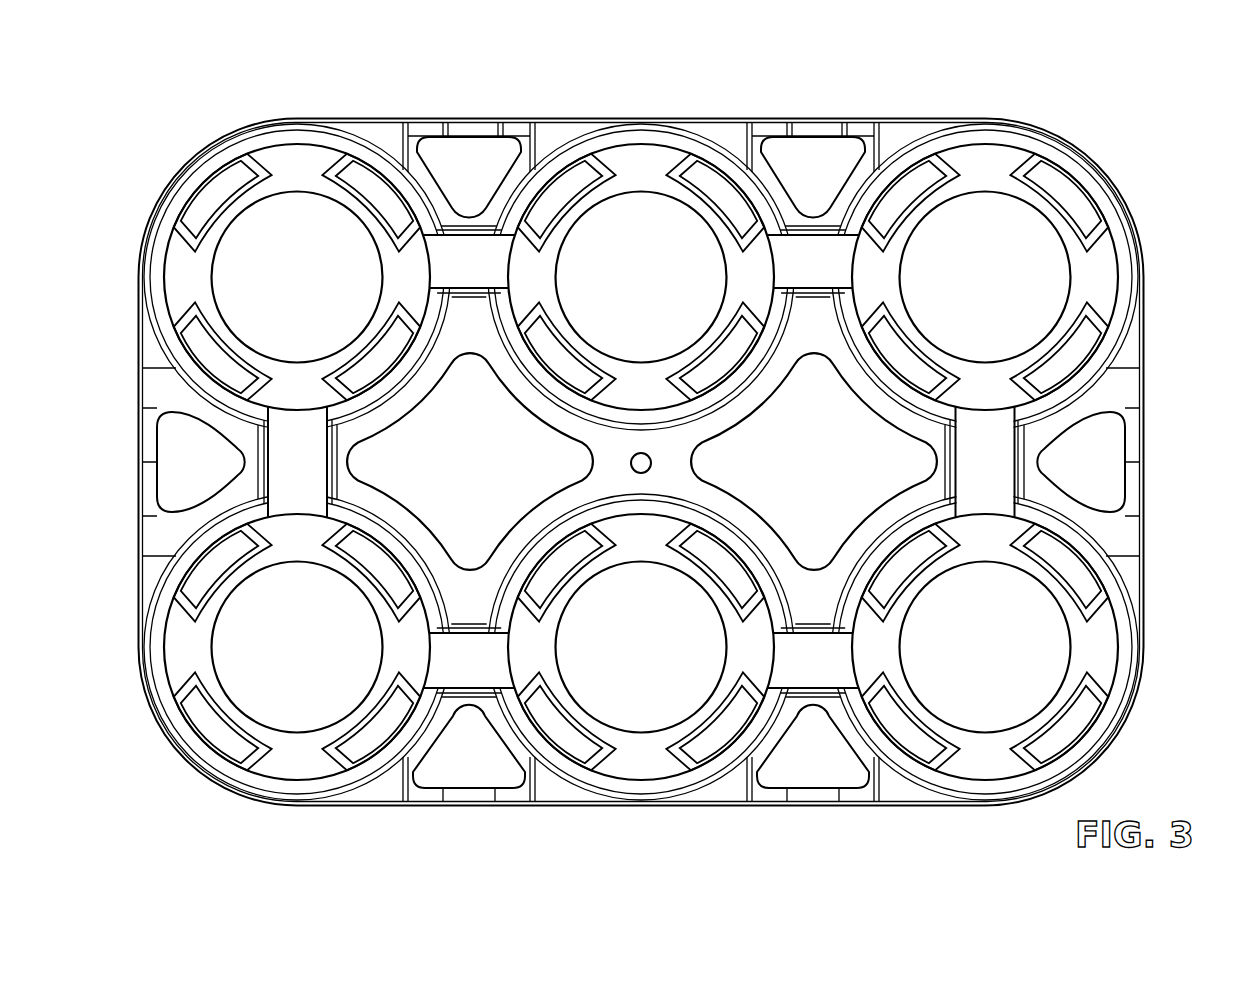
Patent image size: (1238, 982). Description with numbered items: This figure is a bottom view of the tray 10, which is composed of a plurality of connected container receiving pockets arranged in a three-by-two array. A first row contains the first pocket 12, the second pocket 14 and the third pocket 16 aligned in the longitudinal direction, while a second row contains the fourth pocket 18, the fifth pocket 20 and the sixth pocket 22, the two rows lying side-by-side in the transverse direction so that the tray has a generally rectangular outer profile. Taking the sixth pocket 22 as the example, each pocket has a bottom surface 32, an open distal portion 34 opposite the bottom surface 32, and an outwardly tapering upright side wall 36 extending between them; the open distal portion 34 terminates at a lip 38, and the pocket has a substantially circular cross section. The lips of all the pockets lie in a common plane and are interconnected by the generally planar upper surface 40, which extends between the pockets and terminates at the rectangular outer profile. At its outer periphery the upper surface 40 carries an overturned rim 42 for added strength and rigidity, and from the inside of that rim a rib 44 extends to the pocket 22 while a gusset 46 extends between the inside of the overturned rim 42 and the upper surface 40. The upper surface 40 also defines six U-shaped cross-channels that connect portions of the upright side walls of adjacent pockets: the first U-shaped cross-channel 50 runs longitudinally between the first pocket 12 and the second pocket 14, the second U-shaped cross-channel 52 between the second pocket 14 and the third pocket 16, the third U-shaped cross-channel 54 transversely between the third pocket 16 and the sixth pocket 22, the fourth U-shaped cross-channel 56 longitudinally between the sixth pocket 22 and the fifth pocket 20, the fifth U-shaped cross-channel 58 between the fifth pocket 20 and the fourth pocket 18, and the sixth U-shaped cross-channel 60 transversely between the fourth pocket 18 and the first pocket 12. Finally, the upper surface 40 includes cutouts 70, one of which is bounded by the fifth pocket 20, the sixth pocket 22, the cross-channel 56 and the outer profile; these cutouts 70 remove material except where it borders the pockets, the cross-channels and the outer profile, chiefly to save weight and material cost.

The tray 10 is at (654, 463).
The first pocket 12 is at (298, 752).
The second pocket 14 is at (640, 752).
The third pocket 16 is at (987, 752).
The fourth pocket 18 is at (300, 160).
The fifth pocket 20 is at (640, 160).
The sixth pocket 22 is at (986, 158).
The bottom surface 32 is at (1050, 270).
The open distal portion 34 is at (1124, 348).
The upright side wall 36 is at (1020, 407).
The lip 38 is at (1133, 305).
The upper surface 40 is at (736, 132).
The overturned rim 42 is at (690, 119).
The rib 44 is at (892, 793).
The gusset 46 is at (847, 793).
The first U-shaped cross-channel 50 is at (460, 676).
The second U-shaped cross-channel 52 is at (804, 676).
The third U-shaped cross-channel 54 is at (976, 478).
The fourth U-shaped cross-channel 56 is at (804, 280).
The fifth U-shaped cross-channel 58 is at (460, 280).
The sixth U-shaped cross-channel 60 is at (288, 478).
The cutout 70 is at (811, 158).